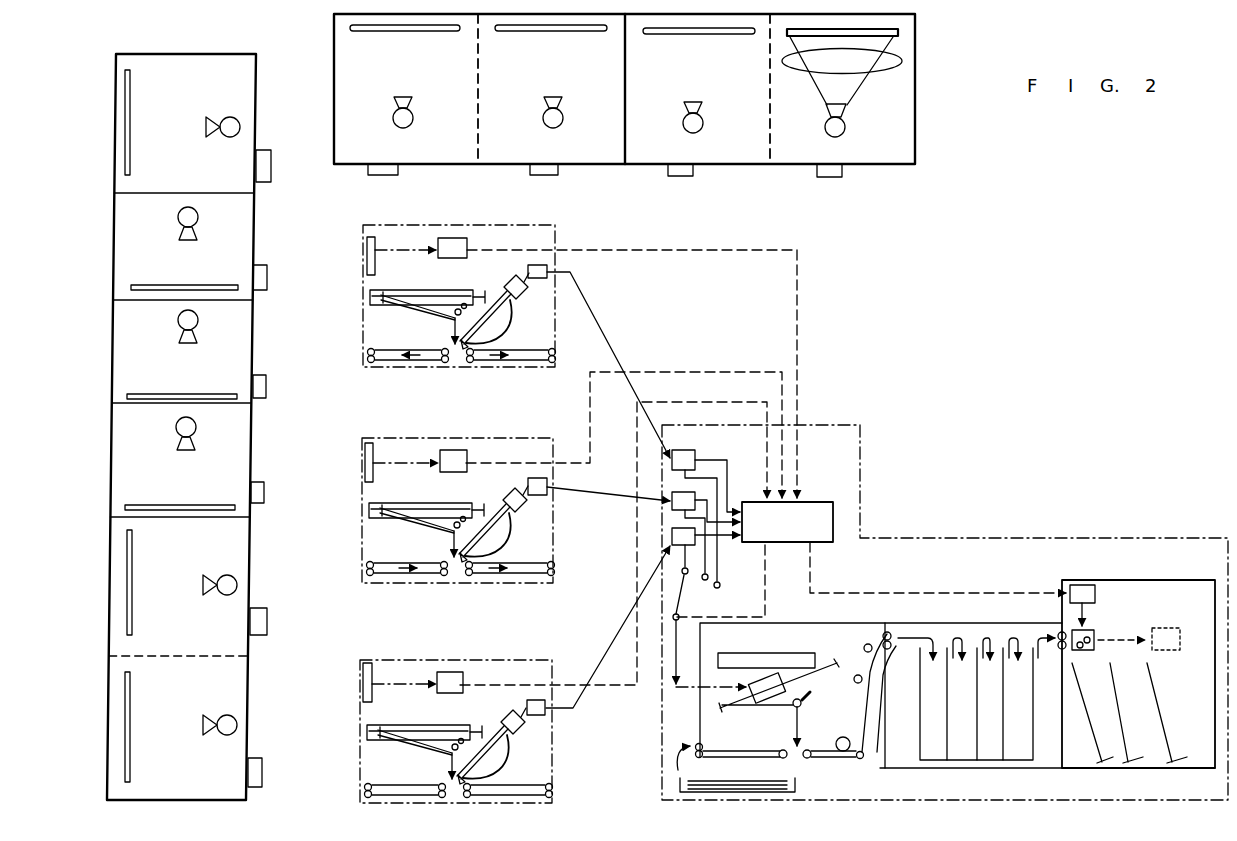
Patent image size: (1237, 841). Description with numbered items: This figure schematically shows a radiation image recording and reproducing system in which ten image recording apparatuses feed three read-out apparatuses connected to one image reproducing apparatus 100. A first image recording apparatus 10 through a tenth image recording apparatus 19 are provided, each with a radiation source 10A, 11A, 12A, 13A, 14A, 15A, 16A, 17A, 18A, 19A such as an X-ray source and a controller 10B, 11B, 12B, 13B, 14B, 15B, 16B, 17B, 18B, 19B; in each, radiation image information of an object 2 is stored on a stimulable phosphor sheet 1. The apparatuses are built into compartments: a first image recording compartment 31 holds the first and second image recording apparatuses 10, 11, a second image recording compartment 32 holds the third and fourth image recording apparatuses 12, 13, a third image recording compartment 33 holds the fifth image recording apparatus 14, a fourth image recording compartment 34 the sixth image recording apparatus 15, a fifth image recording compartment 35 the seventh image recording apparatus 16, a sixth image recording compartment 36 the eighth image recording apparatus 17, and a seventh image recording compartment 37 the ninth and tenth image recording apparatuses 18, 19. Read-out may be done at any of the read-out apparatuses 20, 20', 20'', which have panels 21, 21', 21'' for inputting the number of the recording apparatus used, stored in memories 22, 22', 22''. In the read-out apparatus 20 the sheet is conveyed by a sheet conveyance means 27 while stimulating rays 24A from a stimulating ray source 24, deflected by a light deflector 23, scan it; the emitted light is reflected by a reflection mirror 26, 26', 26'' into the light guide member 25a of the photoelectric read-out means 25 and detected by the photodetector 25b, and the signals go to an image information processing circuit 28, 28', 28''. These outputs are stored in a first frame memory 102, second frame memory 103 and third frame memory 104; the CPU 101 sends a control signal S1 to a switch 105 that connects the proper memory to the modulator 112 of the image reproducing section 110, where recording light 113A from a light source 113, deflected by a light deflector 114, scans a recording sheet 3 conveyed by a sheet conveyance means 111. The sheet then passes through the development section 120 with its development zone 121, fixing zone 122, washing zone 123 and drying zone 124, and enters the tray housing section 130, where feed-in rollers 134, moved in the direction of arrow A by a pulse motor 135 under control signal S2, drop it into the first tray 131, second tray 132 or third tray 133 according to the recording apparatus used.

The stimulable phosphor sheet 1 is at (900, 32).
The object 2 is at (888, 70).
The recording sheet 3 is at (792, 778).
The first image recording apparatus 10 is at (898, 120).
The radiation source 10A is at (846, 128).
The controller 10B is at (841, 177).
The second image recording apparatus 11 is at (735, 160).
The radiation source 11A is at (703, 127).
The controller 11B is at (688, 176).
The third image recording apparatus 12 is at (594, 160).
The radiation source 12A is at (563, 124).
The controller 12B is at (545, 175).
The fourth image recording apparatus 13 is at (449, 160).
The radiation source 13A is at (413, 124).
The controller 13B is at (397, 174).
The fifth image recording apparatus 14 is at (258, 97).
The radiation source 14A is at (228, 117).
The controller 14B is at (272, 172).
The sixth image recording apparatus 15 is at (258, 249).
The radiation source 15A is at (198, 214).
The controller 15B is at (268, 280).
The seventh image recording apparatus 16 is at (256, 319).
The radiation source 16A is at (198, 318).
The controller 16B is at (268, 386).
The eighth image recording apparatus 17 is at (255, 426).
The radiation source 17A is at (196, 427).
The controller 17B is at (266, 495).
The ninth image recording apparatus 18 is at (252, 545).
The radiation source 18A is at (227, 575).
The controller 18B is at (268, 623).
The tenth image recording apparatus 19 is at (250, 689).
The radiation source 19A is at (227, 715).
The controller 19B is at (268, 770).
The first read-out apparatus 20 is at (452, 299).
The second read-out apparatus 20' is at (431, 491).
The third read-out apparatus 20'' is at (429, 710).
The panel 21 is at (379, 256).
The panel 21' is at (373, 462).
The panel 21'' is at (371, 682).
The memory 22 is at (450, 229).
The memory 22' is at (424, 473).
The memory 22'' is at (427, 695).
The light deflector 23 is at (479, 348).
The stimulating ray source 24 is at (416, 290).
The stimulating rays 24A is at (425, 320).
The photoelectric read-out means 25 is at (490, 291).
The light guide member 25a is at (502, 327).
The photodetector 25b is at (512, 278).
The reflection mirror 26 is at (442, 325).
The reflection mirror 26' is at (418, 544).
The reflection mirror 26'' is at (419, 766).
The sheet conveyance means 27 is at (452, 370).
The image information processing circuit 28 is at (554, 267).
The image information processing circuit 28' is at (509, 482).
The image information processing circuit 28'' is at (505, 703).
The first image recording compartment 31 is at (924, 76).
The second image recording compartment 32 is at (328, 42).
The third image recording compartment 33 is at (188, 50).
The fourth image recording compartment 34 is at (258, 229).
The fifth image recording compartment 35 is at (258, 357).
The sixth image recording compartment 36 is at (257, 458).
The seventh image recording compartment 37 is at (256, 585).
The image reproducing apparatus 100 is at (840, 425).
The central processing unit 101 is at (815, 502).
The first frame memory 102 is at (697, 454).
The second frame memory 103 is at (670, 506).
The third frame memory 104 is at (670, 539).
The switch 105 is at (684, 599).
The image reproducing section 110 is at (812, 636).
The sheet conveyance means 111 is at (757, 752).
The modulator 112 is at (786, 683).
The light source 113 is at (731, 654).
The recording light 113A is at (854, 692).
The light deflector 114 is at (802, 707).
The development section 120 is at (968, 636).
The development zone 121 is at (930, 762).
The fixing zone 122 is at (960, 762).
The washing zone 123 is at (990, 762).
The drying zone 124 is at (1022, 762).
The tray housing section 130 is at (1152, 606).
The first tray 131 is at (1102, 764).
The second tray 132 is at (1133, 764).
The third tray 133 is at (1175, 764).
The feed-in rollers 134 is at (1095, 632).
The pulse motor 135 is at (1090, 590).
The control signal S1 is at (766, 577).
The control signal S2 is at (905, 593).
The arrow A is at (1139, 634).